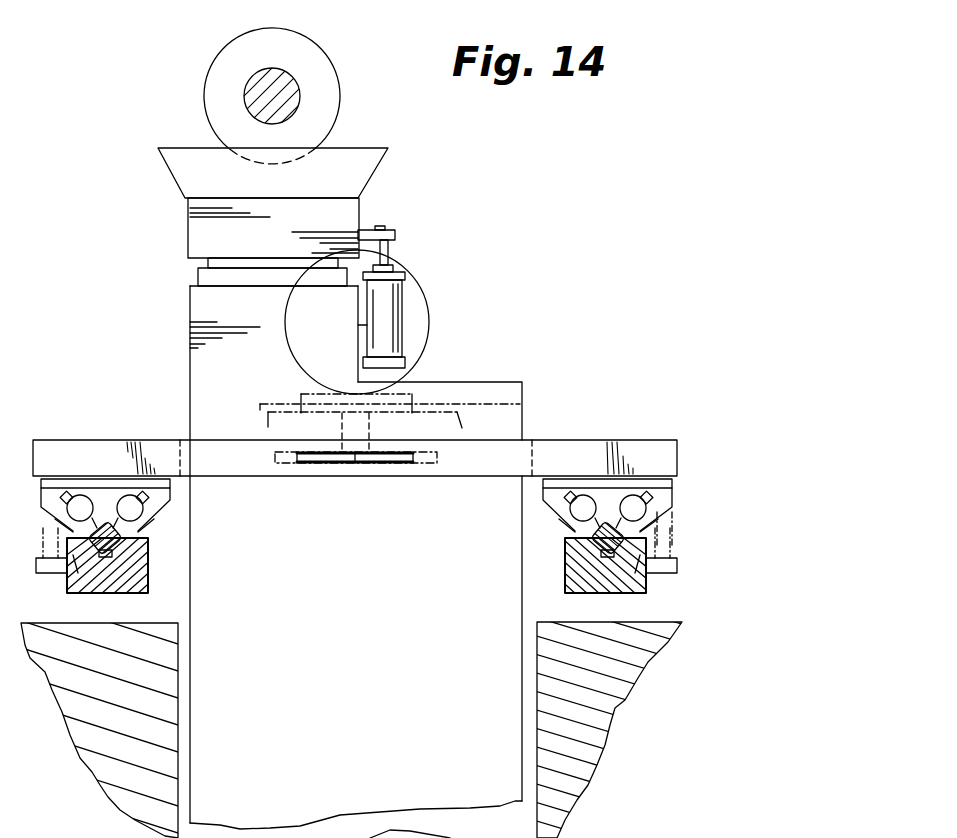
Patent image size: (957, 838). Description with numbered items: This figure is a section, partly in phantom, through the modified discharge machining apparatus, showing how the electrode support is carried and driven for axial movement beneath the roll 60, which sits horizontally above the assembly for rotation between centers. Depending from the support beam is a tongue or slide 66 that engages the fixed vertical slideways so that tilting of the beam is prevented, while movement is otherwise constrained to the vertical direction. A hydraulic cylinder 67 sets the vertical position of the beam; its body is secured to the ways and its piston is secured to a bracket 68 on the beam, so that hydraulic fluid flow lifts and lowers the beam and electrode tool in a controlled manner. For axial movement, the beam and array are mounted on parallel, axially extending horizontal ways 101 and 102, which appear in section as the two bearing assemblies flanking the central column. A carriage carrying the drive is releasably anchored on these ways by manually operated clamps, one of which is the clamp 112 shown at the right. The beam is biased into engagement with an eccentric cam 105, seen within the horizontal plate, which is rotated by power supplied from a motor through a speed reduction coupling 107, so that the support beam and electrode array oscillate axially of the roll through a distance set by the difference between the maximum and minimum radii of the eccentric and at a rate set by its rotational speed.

The roll 60 is at (307, 42).
The tongue or slide 66 is at (200, 356).
The hydraulic cylinder 67 is at (397, 297).
The bracket 68 is at (400, 233).
The horizontal way 101 is at (595, 503).
The horizontal way 102 is at (102, 503).
The eccentric cam 105 is at (425, 458).
The speed reduction coupling 107 is at (430, 341).
The clamp 112 is at (663, 528).